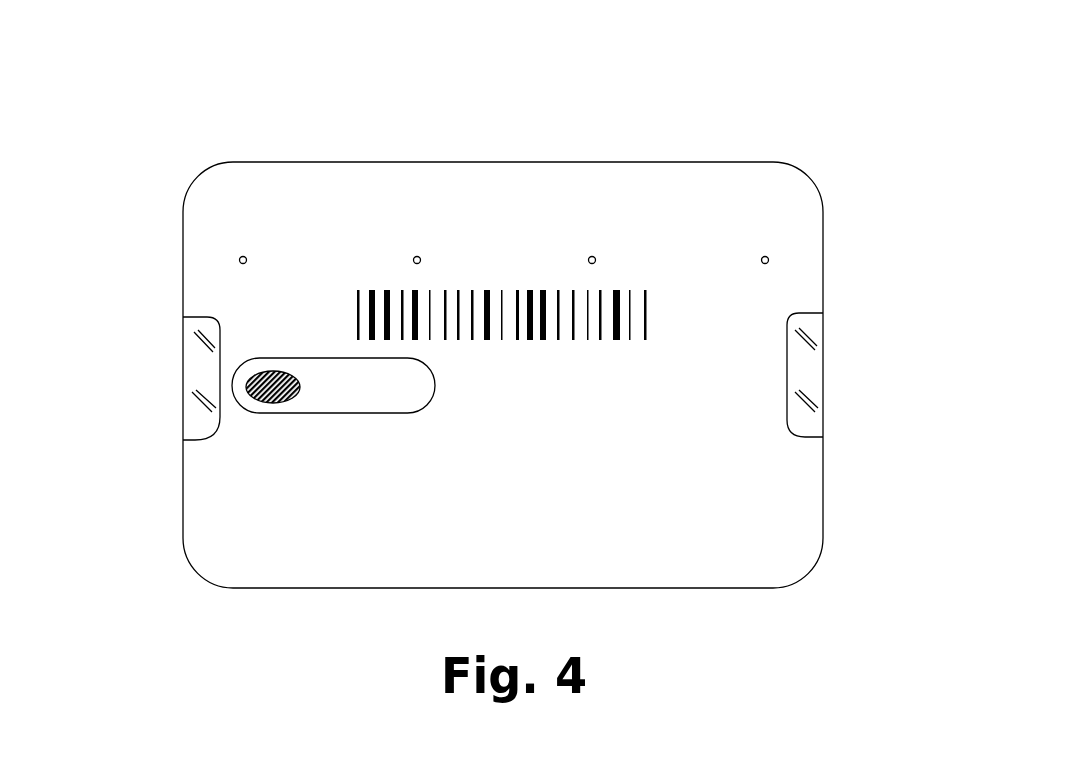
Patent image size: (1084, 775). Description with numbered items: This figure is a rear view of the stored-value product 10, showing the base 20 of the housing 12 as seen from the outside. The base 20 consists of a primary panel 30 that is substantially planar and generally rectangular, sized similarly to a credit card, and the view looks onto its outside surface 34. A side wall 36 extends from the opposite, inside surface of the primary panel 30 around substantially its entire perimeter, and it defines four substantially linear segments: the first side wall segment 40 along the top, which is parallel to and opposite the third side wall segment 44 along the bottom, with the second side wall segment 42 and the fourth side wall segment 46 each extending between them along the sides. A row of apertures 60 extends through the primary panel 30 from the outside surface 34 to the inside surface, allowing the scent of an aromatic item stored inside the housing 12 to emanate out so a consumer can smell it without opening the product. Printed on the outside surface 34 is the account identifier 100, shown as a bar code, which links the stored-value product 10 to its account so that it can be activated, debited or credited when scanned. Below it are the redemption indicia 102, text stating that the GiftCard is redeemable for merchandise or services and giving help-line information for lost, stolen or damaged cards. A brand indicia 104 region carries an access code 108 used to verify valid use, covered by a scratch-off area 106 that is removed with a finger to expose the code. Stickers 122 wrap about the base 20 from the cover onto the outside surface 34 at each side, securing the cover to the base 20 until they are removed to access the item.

The stored-value product 10 is at (198, 133).
The housing 12 is at (183, 183).
The base 20 is at (240, 203).
The primary panel 30 is at (735, 186).
The outside surface 34 is at (786, 193).
The side wall 36 is at (823, 218).
The first side wall segment 40 is at (597, 162).
The second side wall segment 42 is at (183, 507).
The third side wall segment 44 is at (328, 588).
The fourth side wall segment 46 is at (823, 432).
The apertures 60 is at (244, 256).
The account identifier 100 is at (487, 292).
The redemption indicia 102 is at (770, 533).
The brand indicia 104 is at (265, 377).
The scratch-off area 106 is at (247, 413).
The access code 108 is at (333, 377).
The stickers 122 is at (203, 368).